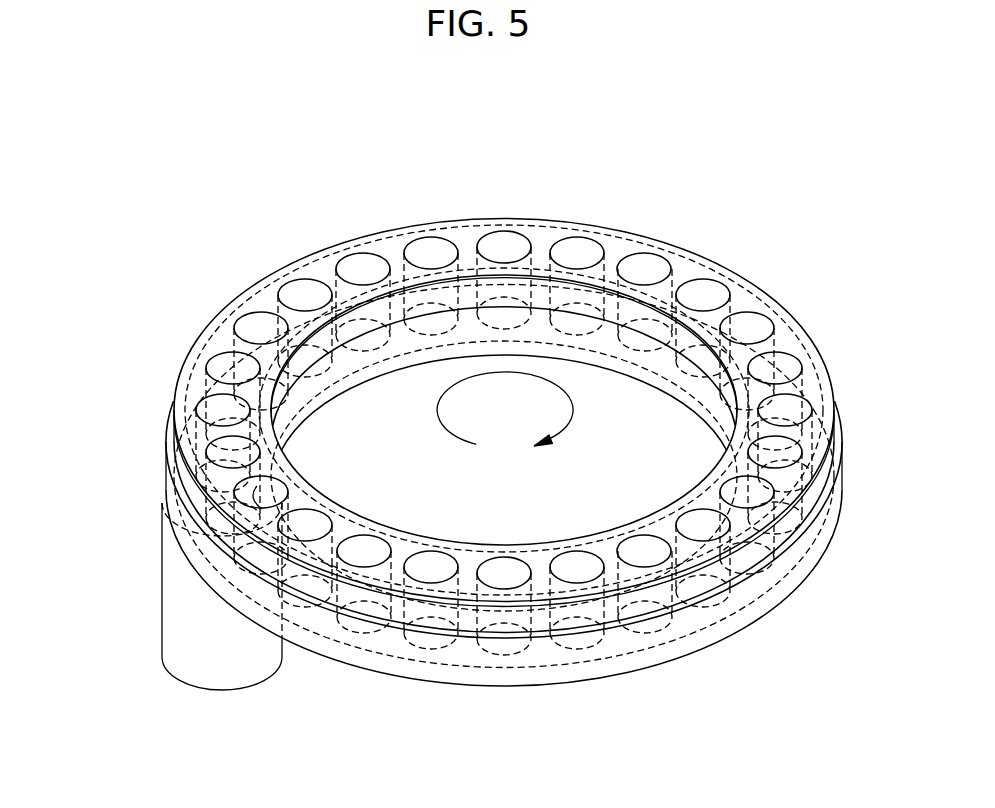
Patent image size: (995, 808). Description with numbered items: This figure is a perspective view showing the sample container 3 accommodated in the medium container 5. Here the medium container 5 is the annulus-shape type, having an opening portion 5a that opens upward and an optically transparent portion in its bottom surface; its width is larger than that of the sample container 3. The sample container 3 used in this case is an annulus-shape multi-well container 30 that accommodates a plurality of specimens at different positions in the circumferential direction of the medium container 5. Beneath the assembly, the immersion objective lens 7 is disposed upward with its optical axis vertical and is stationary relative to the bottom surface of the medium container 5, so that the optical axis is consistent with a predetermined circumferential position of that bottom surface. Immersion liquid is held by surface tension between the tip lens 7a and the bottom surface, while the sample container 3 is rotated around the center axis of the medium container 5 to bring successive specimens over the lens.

The sample container 3 is at (504, 402).
The multi-well container 30 is at (465, 240).
The medium container 5 is at (714, 657).
The opening portion 5a is at (476, 614).
The immersion objective lens 7 is at (150, 669).
The tip lens 7a is at (163, 513).